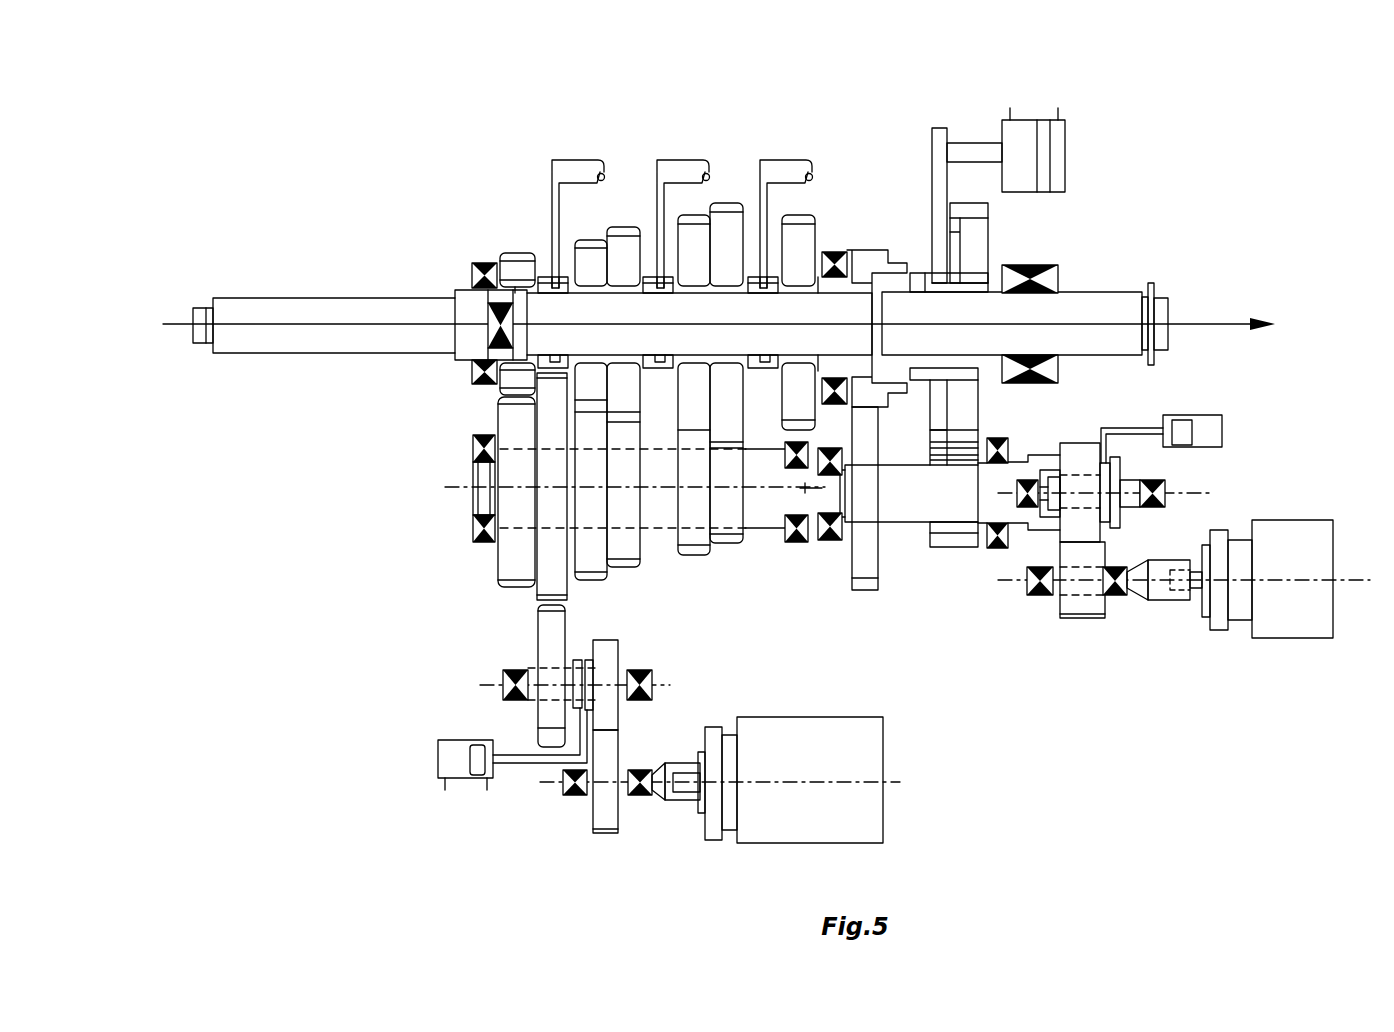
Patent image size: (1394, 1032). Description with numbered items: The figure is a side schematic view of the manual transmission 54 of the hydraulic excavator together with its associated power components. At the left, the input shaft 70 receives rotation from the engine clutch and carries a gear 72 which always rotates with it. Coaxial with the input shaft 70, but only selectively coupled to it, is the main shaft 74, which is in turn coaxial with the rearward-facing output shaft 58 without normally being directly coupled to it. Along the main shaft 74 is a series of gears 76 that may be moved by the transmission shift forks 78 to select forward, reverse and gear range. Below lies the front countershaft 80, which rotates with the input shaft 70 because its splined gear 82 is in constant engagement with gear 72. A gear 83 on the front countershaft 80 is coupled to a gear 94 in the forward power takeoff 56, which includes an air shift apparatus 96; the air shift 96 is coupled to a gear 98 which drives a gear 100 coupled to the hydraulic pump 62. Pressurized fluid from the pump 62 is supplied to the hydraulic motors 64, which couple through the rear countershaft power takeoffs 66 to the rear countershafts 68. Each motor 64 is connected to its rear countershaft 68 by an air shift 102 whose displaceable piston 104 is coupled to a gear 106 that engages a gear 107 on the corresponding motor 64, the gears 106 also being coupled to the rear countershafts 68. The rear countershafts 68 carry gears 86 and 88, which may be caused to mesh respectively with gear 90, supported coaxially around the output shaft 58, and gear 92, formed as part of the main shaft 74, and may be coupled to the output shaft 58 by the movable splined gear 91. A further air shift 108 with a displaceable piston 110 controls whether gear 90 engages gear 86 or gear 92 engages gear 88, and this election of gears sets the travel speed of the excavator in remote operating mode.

The manual transmission 54 is at (388, 205).
The forward power takeoff 56 is at (497, 637).
The power output shaft 58 is at (1122, 288).
The hydraulic pump 62 is at (765, 858).
The hydraulic motors 64 is at (1268, 655).
The rear countershaft power takeoffs 66 is at (1038, 440).
The rear countershafts 68 is at (900, 542).
The input shaft 70 is at (272, 376).
The gear 72 is at (512, 240).
The main shaft 74 is at (853, 311).
The series of gears 76 is at (826, 212).
The transmission shift forks 78 is at (788, 148).
The front countershaft 80 is at (452, 462).
The gear 82 is at (480, 407).
The gear 83 is at (512, 601).
The gear 86 is at (942, 553).
The gear 88 is at (848, 592).
The gear 90 is at (1000, 243).
The movable splined gear 91 is at (918, 275).
The gear 92 is at (880, 240).
The gear 94 is at (586, 626).
The air shift apparatus 96 is at (428, 761).
The gear 98 is at (628, 655).
The gear 100 is at (625, 757).
The air shifts 102 is at (1262, 418).
The displaceable piston 104 is at (1215, 410).
The gear 106 is at (1088, 438).
The gear 107 is at (1075, 632).
The air shift 108 is at (1000, 110).
The displaceable piston 110 is at (1075, 185).